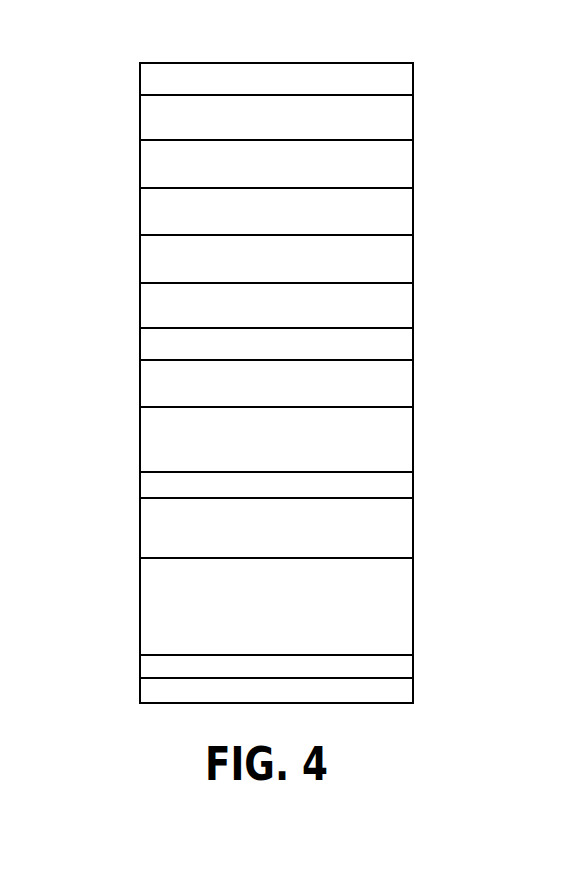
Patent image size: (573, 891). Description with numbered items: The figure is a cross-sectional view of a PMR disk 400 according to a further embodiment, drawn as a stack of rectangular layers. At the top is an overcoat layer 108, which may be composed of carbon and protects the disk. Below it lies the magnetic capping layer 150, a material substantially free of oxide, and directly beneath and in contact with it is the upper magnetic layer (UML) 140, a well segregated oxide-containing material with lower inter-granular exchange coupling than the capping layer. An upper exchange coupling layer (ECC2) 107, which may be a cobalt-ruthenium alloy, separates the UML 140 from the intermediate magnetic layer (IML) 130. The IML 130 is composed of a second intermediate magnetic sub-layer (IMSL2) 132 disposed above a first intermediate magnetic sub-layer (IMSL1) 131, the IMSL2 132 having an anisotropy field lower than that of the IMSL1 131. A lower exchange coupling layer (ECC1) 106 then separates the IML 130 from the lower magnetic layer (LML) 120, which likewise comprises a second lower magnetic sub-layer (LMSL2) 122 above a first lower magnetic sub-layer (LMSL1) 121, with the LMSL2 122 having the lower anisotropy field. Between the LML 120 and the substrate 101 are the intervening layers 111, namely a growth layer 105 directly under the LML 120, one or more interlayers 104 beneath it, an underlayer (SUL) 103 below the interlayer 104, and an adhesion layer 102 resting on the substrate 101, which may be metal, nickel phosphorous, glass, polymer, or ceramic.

The PMR disk 400 is at (405, 45).
The overcoat layer 108 is at (140, 77).
The magnetic capping layer 150 is at (140, 115).
The upper magnetic layer (UML) 140 is at (140, 155).
The upper exchange coupling layer (ECC2) 107 is at (140, 203).
The second intermediate magnetic sub-layer (IMSL2) 132 is at (140, 261).
The first intermediate magnetic sub-layer (IMSL1) 131 is at (140, 301).
The intermediate magnetic layer (IML) 130 is at (420, 235).
The lower exchange coupling layer (ECC1) 106 is at (140, 345).
The second lower magnetic sub-layer (LMSL2) 122 is at (140, 381).
The first lower magnetic sub-layer (LMSL1) 121 is at (140, 433).
The lower magnetic layer (LML) 120 is at (420, 360).
The growth layer 105 is at (140, 485).
The interlayer 104 is at (140, 533).
The underlayer (SUL) 103 is at (140, 593).
The adhesion layer 102 is at (140, 665).
The substrate 101 is at (140, 693).
The intervening layers 111 is at (420, 475).